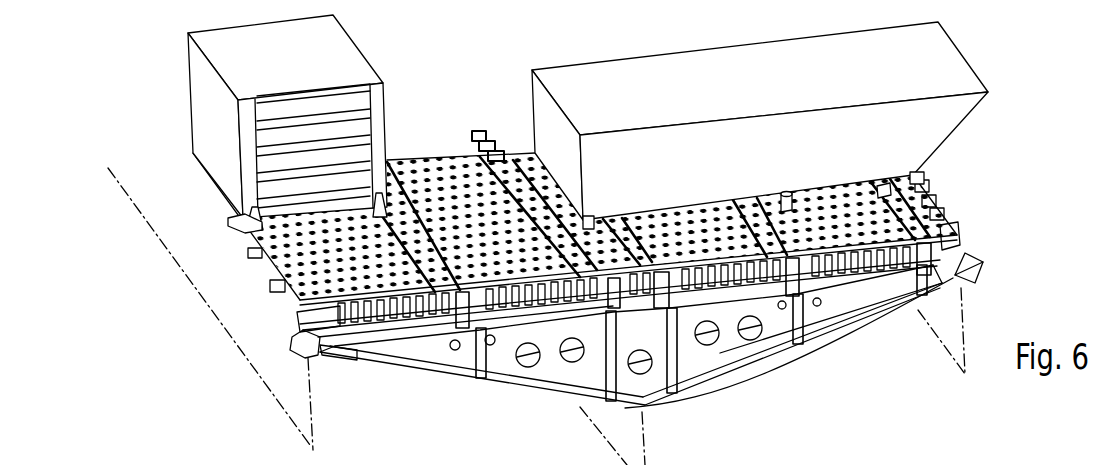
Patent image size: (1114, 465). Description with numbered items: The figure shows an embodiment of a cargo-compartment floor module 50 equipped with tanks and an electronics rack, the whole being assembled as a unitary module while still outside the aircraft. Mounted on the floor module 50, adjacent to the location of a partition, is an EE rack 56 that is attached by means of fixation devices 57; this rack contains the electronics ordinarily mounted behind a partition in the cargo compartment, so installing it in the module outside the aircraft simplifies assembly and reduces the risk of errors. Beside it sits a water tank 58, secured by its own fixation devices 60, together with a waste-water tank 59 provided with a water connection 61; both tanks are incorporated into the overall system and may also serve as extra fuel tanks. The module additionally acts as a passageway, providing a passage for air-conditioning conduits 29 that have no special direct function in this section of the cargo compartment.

The floor module 50 is at (976, 234).
The EE rack 56 is at (200, 96).
The fixation devices 57 is at (247, 235).
The water tank 58 is at (940, 128).
The waste-water tank 59 is at (828, 352).
The fixation devices 60 is at (880, 187).
The water connection 61 is at (783, 193).
The air-conditioning conduits 29 is at (758, 338).